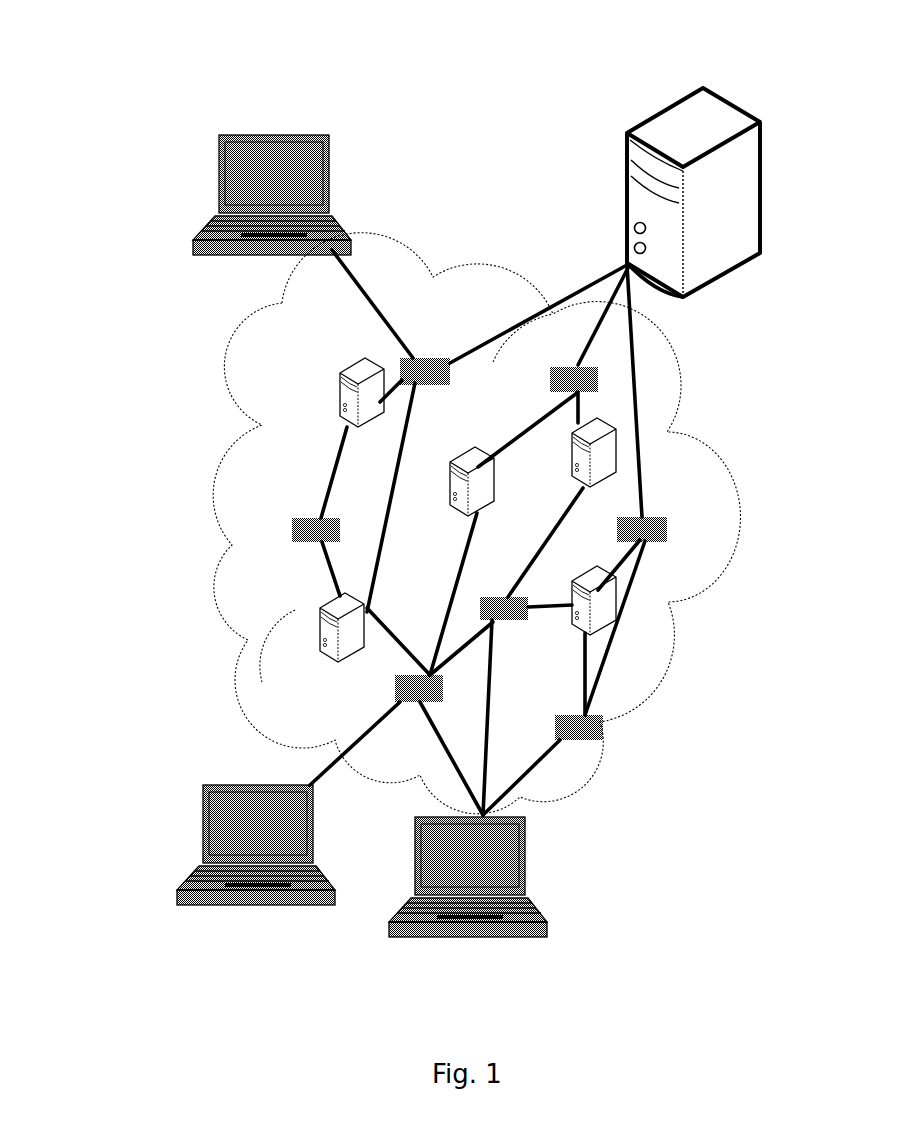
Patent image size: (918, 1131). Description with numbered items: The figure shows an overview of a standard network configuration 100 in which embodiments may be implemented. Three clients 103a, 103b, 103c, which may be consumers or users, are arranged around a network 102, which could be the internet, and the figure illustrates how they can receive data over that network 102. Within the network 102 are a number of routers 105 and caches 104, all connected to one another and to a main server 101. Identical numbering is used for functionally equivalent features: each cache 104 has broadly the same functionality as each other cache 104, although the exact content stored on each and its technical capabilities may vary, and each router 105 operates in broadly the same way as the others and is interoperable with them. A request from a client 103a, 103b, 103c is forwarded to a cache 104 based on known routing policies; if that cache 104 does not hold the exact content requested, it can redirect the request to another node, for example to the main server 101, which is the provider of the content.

The network configuration 100 is at (130, 88).
The main server 101 is at (702, 130).
The network 102 is at (308, 348).
The client 103a is at (278, 175).
The client 103b is at (258, 832).
The client 103c is at (495, 870).
The cache 104 is at (350, 632).
The router 105 is at (570, 385).